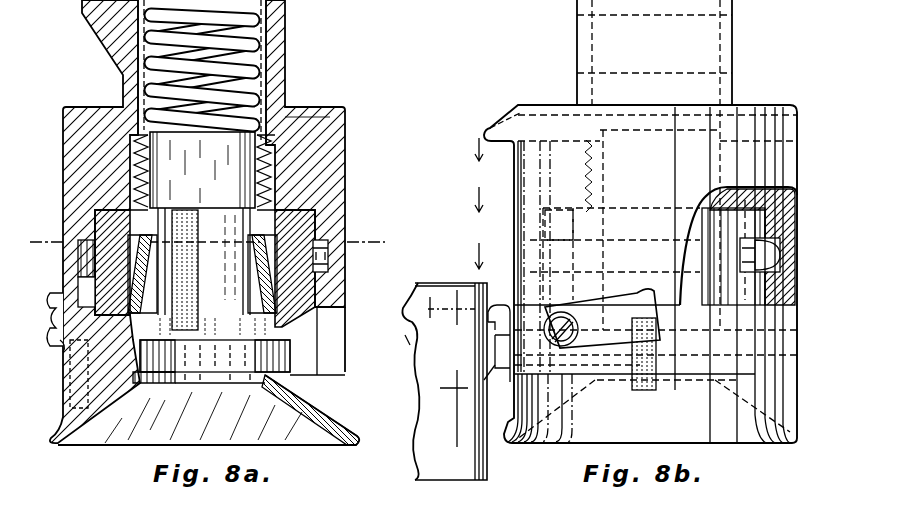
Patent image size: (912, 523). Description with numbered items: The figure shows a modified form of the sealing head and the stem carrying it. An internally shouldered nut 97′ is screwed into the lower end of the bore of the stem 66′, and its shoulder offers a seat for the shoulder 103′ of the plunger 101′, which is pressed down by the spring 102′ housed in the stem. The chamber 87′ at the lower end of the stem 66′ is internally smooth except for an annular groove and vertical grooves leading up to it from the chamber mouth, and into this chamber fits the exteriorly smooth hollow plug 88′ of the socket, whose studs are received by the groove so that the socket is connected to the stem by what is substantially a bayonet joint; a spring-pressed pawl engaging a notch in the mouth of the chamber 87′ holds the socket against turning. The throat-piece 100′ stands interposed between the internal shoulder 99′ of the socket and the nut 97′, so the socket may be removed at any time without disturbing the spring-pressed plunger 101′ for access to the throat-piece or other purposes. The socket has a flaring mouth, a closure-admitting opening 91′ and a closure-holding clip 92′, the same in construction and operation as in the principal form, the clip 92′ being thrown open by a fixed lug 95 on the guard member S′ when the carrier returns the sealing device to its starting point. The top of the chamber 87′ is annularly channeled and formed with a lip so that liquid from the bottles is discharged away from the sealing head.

In FIG. 8a, the plunger 101′ is at (95, 221).
In FIG. 8a, the chamber 87′ is at (340, 288).
In FIG. 8b, the chamber 87′ is at (797, 295).
In FIG. 8a, the stem 66′ is at (277, 60).
In FIG. 8b, the stem 66′ is at (727, 55).
In FIG. 8a, the spring 102′ is at (250, 47).
In FIG. 8a, the internally shouldered nut 97′ is at (296, 195).
In FIG. 8b, the internally shouldered nut 97′ is at (791, 193).
In FIG. 8a, the shoulder 103′ is at (207, 233).
In FIG. 8a, the throat-piece 100′ is at (318, 312).
In FIG. 8a, the hollow plug 88′ is at (95, 285).
In FIG. 8b, the hollow plug 88′ is at (748, 296).
In FIG. 8a, the internal shoulder 99′ is at (62, 347).
In FIG. 8a, the closure-holding clip 92′ is at (223, 364).
In FIG. 8b, the closure-holding clip 92′ is at (484, 380).
In FIG. 8a, the closure-admitting opening 91′ is at (312, 358).
In FIG. 8b, the fixed lug 95 is at (503, 306).
In FIG. 8b, the guard member S′ is at (485, 465).